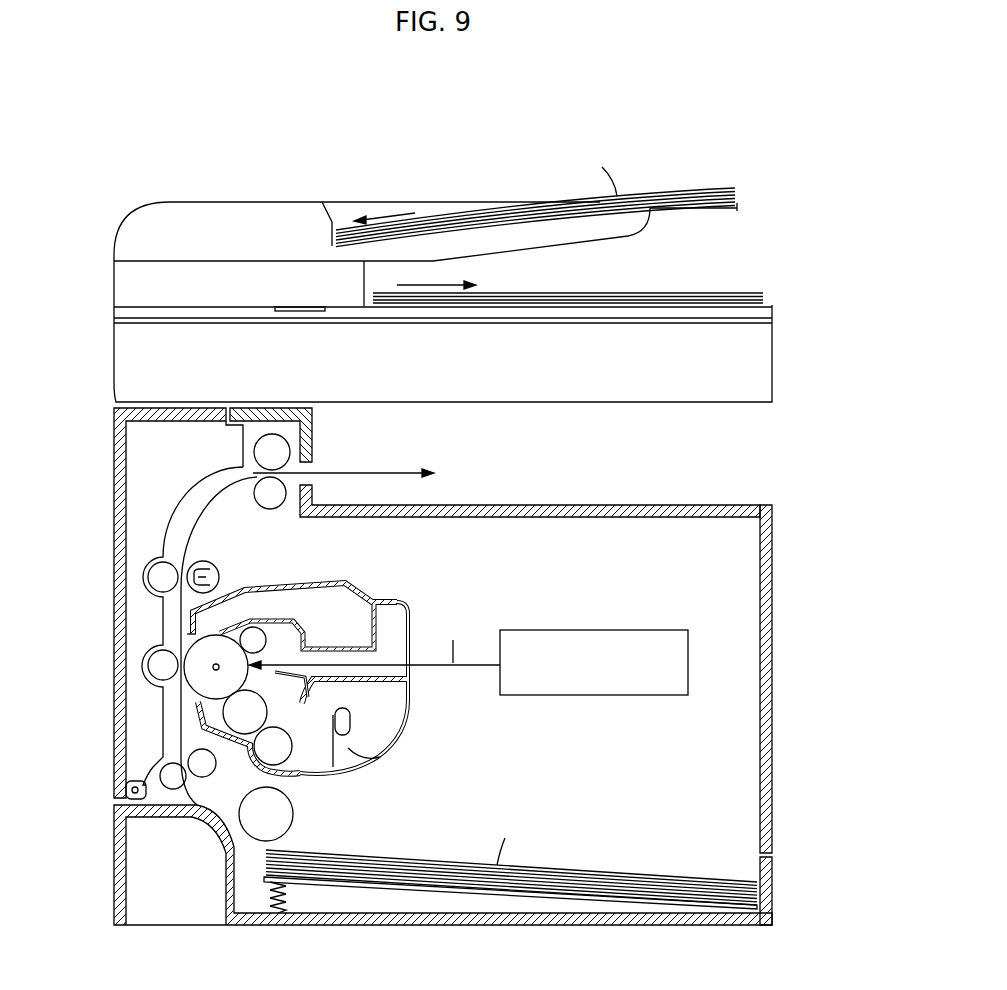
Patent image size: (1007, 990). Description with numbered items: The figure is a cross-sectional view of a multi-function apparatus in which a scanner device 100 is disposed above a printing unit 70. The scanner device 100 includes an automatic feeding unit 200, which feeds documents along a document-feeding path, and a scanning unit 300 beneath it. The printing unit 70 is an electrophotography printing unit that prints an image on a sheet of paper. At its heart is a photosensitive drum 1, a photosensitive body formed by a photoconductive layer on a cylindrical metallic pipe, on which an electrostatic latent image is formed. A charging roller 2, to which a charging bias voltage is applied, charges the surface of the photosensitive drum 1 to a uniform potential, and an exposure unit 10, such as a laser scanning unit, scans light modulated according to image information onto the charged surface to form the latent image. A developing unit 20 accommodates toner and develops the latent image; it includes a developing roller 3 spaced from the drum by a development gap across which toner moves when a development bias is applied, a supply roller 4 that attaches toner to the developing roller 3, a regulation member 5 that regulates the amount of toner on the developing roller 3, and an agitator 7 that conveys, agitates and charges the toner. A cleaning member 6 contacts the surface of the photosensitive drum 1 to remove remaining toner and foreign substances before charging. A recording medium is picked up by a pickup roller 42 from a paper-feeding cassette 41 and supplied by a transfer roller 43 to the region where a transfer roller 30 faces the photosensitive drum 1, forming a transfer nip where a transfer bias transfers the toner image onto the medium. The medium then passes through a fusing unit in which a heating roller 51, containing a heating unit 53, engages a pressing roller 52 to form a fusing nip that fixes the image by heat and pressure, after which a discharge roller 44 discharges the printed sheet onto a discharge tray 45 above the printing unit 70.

The scanner device 100 is at (750, 189).
The automatic feeding unit 200 is at (138, 216).
The scanning unit 300 is at (772, 355).
The printing unit 70 is at (740, 489).
The discharge tray 45 is at (512, 504).
The discharge roller 44 is at (290, 450).
The pressing roller 52 is at (148, 573).
The heating roller 51 is at (215, 559).
The heating unit 53 is at (197, 573).
The transfer roller 30 is at (150, 665).
The developing unit 20 is at (380, 765).
The charging roller 2 is at (270, 620).
The photosensitive drum 1 is at (193, 685).
The cleaning member 6 is at (234, 630).
The developing roller 3 is at (192, 727).
The regulation member 5 is at (318, 694).
The agitator 7 is at (352, 720).
The supply roller 4 is at (352, 752).
The exposure unit 10 is at (630, 695).
The transfer roller 43 is at (203, 778).
The pickup roller 42 is at (262, 842).
The paper-feeding cassette 41 is at (420, 892).